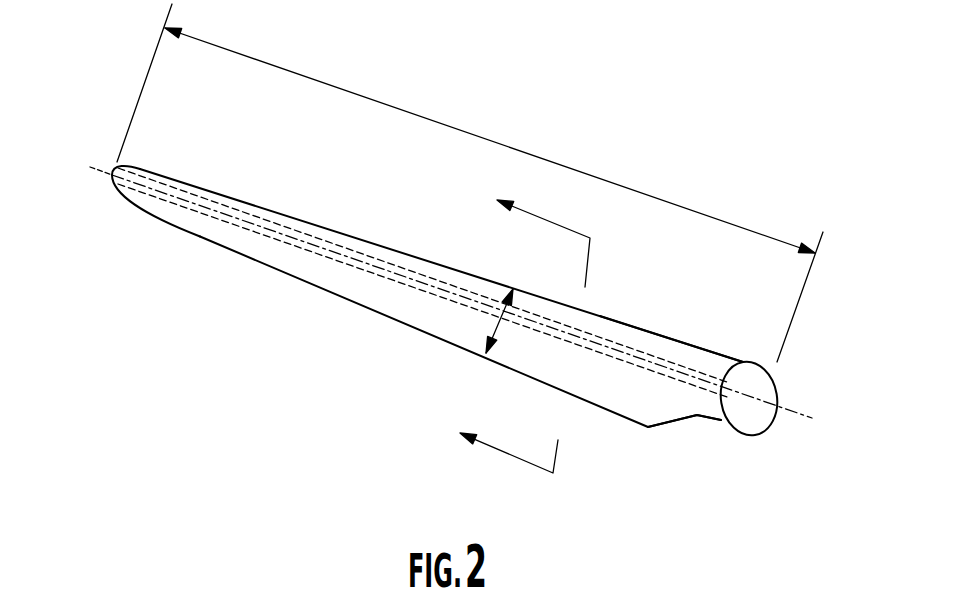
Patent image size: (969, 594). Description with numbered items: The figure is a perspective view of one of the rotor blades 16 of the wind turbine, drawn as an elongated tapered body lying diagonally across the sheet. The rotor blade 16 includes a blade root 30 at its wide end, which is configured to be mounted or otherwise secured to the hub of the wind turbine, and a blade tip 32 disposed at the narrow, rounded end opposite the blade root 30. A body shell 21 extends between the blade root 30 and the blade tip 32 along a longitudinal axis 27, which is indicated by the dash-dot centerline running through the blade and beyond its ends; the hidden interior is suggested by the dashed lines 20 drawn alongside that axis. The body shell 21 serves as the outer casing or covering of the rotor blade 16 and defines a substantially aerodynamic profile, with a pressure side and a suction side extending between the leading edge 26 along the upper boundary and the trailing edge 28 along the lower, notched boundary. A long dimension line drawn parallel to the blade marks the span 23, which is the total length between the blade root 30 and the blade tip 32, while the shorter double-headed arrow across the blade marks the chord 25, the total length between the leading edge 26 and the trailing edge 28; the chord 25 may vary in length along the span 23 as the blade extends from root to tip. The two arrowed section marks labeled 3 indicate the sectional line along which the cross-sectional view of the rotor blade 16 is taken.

The rotor blade 16 is at (708, 131).
The longitudinal axis 20 is at (384, 285).
The body shell 21 is at (324, 268).
The span 23 is at (405, 110).
The chord 25 is at (497, 326).
The leading edge 26 is at (633, 323).
The longitudinal axis 27 is at (105, 173).
The trailing edge 28 is at (613, 413).
The blade root 30 is at (738, 420).
The blade tip 32 is at (112, 172).
The sectional line 3- 3 is at (525, 347).